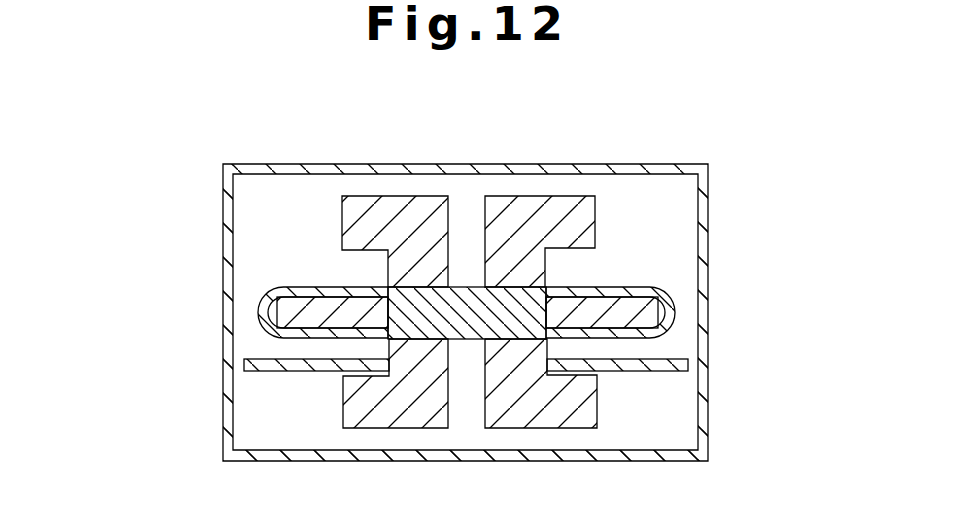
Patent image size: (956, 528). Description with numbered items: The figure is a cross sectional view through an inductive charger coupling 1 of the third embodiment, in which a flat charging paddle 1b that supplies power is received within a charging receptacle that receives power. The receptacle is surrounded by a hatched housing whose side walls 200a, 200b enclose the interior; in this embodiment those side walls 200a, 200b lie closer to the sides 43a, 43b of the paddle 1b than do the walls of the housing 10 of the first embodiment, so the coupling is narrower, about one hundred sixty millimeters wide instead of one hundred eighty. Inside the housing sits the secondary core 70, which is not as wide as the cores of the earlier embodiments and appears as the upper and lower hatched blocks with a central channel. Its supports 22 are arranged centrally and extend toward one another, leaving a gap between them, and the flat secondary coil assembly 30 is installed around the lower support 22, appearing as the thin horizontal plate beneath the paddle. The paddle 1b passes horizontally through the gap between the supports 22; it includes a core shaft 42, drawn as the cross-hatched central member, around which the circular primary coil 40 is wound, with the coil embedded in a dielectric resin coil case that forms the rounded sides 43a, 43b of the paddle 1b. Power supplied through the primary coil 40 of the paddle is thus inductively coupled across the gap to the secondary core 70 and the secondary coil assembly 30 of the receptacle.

The inductive charger coupling 1 is at (466, 290).
The flat charging paddle 1b is at (299, 276).
The housing 10 is at (507, 420).
The support 22 is at (408, 372).
The flat secondary coil assembly 30 is at (653, 372).
The primary coil 40 is at (620, 303).
The core shaft 42 is at (463, 340).
The side of the paddle 43a is at (677, 307).
The side of the paddle 43b is at (262, 313).
The secondary core 70 is at (518, 192).
The side wall 200a is at (690, 222).
The side wall 200b is at (246, 265).